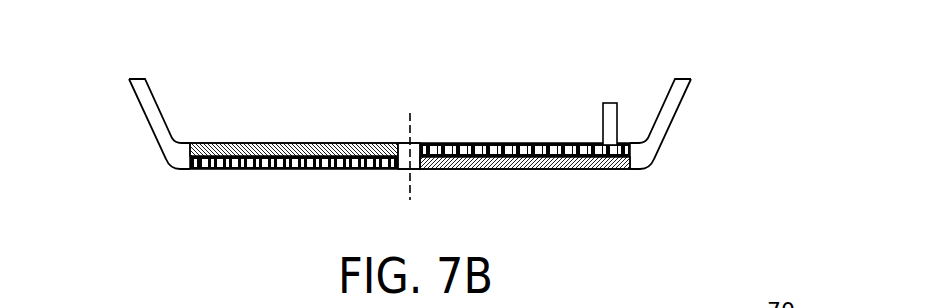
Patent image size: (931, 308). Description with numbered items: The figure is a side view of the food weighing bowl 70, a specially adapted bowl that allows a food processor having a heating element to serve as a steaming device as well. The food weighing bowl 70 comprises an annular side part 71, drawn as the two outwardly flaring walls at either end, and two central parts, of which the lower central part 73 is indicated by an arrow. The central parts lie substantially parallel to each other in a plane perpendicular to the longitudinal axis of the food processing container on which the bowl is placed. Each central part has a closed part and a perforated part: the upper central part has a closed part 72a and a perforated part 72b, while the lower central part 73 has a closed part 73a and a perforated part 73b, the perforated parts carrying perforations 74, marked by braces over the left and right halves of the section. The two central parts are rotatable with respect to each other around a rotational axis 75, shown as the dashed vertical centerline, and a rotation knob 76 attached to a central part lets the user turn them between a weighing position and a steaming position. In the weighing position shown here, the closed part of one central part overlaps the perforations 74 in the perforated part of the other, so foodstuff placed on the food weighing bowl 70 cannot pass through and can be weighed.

The food weighing bowl 70 is at (728, 58).
The annular side part 71 is at (138, 98).
The closed part of central part 72 72a is at (302, 142).
The perforated part of central part 72 72b is at (573, 144).
The central part 73 is at (575, 188).
The closed part of central part 73 73a is at (520, 170).
The perforated part of central part 73 73b is at (247, 170).
The perforations 74 is at (633, 130).
The rotational axis 75 is at (405, 142).
The rotation knob 76 is at (610, 103).